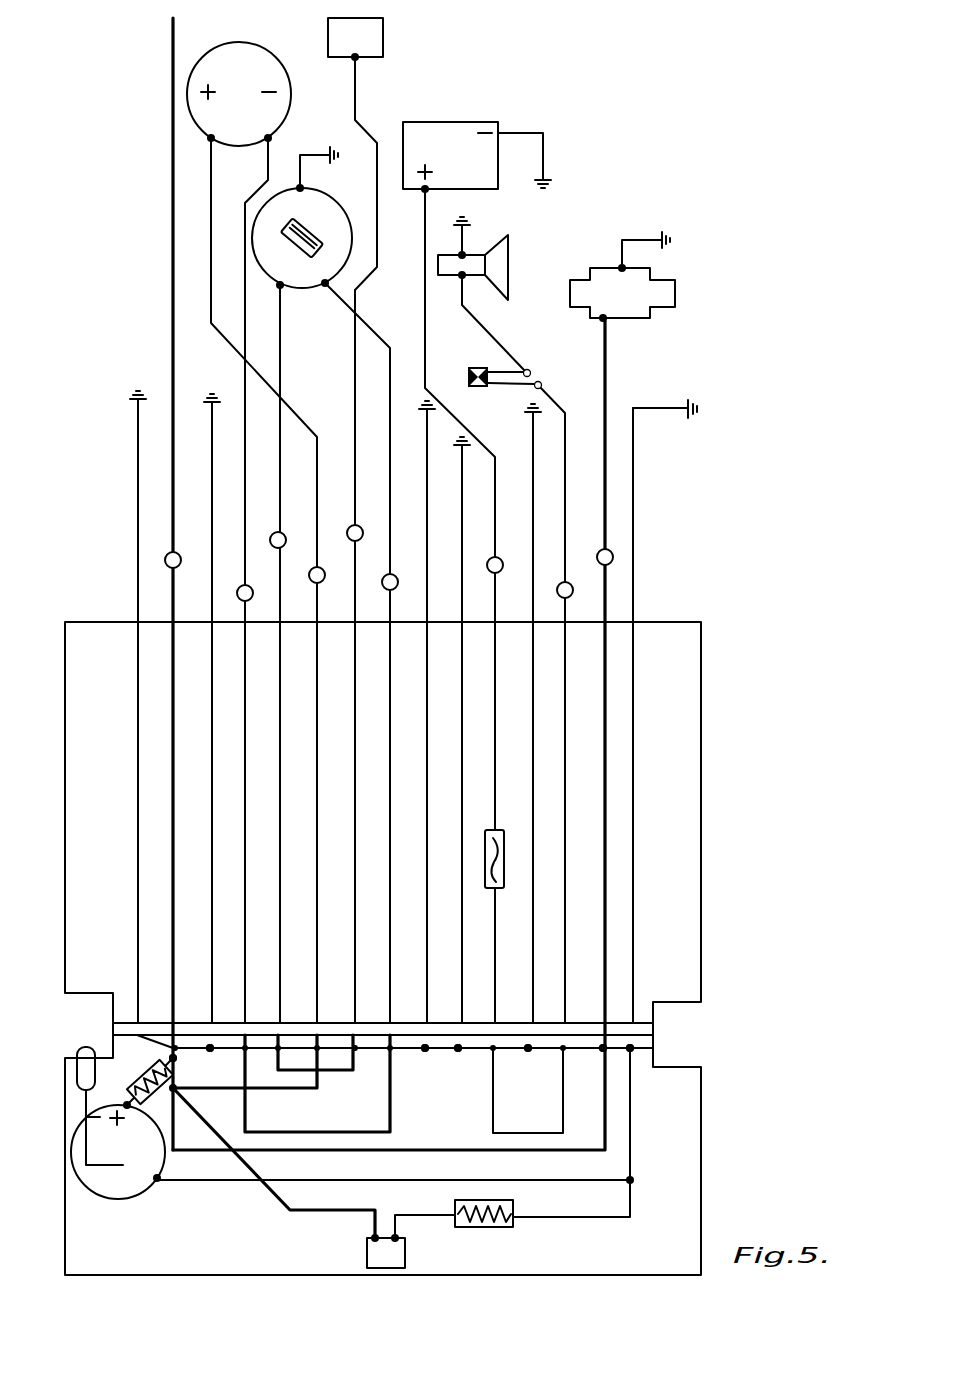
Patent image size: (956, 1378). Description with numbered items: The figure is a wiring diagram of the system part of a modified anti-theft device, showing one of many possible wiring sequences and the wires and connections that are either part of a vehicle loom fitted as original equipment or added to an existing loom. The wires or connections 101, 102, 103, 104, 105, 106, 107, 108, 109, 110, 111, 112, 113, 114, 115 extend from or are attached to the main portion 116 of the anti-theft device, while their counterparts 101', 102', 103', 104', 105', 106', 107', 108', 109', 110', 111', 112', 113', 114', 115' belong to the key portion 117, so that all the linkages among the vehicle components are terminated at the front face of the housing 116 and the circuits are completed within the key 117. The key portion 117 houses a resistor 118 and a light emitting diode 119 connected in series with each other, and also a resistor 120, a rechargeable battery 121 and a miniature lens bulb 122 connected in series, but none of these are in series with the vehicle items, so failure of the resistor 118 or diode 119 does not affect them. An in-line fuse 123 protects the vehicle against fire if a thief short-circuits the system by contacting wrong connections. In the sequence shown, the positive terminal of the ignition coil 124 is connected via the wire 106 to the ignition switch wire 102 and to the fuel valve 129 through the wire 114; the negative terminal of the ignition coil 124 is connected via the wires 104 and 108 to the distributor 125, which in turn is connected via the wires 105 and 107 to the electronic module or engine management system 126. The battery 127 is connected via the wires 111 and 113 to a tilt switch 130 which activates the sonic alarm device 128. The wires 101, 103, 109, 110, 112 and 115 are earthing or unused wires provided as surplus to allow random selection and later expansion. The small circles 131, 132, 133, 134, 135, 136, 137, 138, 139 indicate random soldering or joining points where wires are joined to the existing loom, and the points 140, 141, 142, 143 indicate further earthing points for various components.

The earthing or unused wire 101 is at (104, 707).
The ignition switch wire 102 is at (235, 628).
The earthing or unused wire 103 is at (157, 708).
The wire 104 is at (181, 580).
The wire 105 is at (187, 654).
The wire 106 is at (266, 580).
The wire 107 is at (334, 540).
The wire 108 is at (371, 651).
The earthing or unused wire 109 is at (458, 707).
The earthing or unused wire 110 is at (483, 722).
The wire 111 is at (508, 606).
The earthing or unused wire 112 is at (598, 713).
The wire 113 is at (605, 704).
The wire 114 is at (422, 734).
The earthing or unused wire 115 is at (547, 823).
The main portion of the anti-theft device 116 is at (701, 875).
The key portion 117 is at (701, 1145).
The resistor 118 is at (490, 1228).
The light emitting diode 119 is at (405, 1255).
The resistor 120 is at (133, 1070).
The rechargeable battery 121 is at (105, 1198).
The miniature lens bulb 122 is at (82, 1047).
The in-line fuse 123 is at (504, 826).
The ignition coil 124 is at (200, 60).
The distributor 125 is at (350, 222).
The electronic module or engine management system 126 is at (383, 40).
The battery 127 is at (467, 122).
The sonic alarm device 128 is at (500, 266).
The fuel valve 129 is at (675, 296).
The tilt switch 130 is at (470, 367).
The soldering or joining point 131 is at (165, 562).
The soldering or joining point 132 is at (237, 593).
The soldering or joining point 133 is at (282, 532).
The soldering or joining point 134 is at (323, 582).
The soldering or joining point 135 is at (352, 525).
The soldering or joining point 136 is at (393, 573).
The soldering or joining point 137 is at (498, 556).
The soldering or joining point 138 is at (573, 590).
The soldering or joining point 139 is at (613, 557).
The earthing point 140 is at (543, 160).
The earthing point 141 is at (643, 238).
The earthing point 142 is at (663, 408).
The earthing point 143 is at (313, 147).
The wire or connection 101' is at (204, 1064).
The wire or connection 102' is at (188, 1013).
The wire or connection 103' is at (258, 1009).
The wire or connection 104' is at (260, 1086).
The wire or connection 105' is at (299, 1086).
The wire or connection 106' is at (341, 1081).
The wire or connection 107' is at (391, 1082).
The wire or connection 108' is at (433, 1082).
The wire or connection 109' is at (452, 1067).
The wire or connection 110' is at (491, 1016).
The wire or connection 111' is at (524, 1069).
The wire or connection 112' is at (562, 1015).
The wire or connection 113' is at (619, 1072).
The wire or connection 114' is at (638, 1008).
The wire or connection 115' is at (671, 1039).